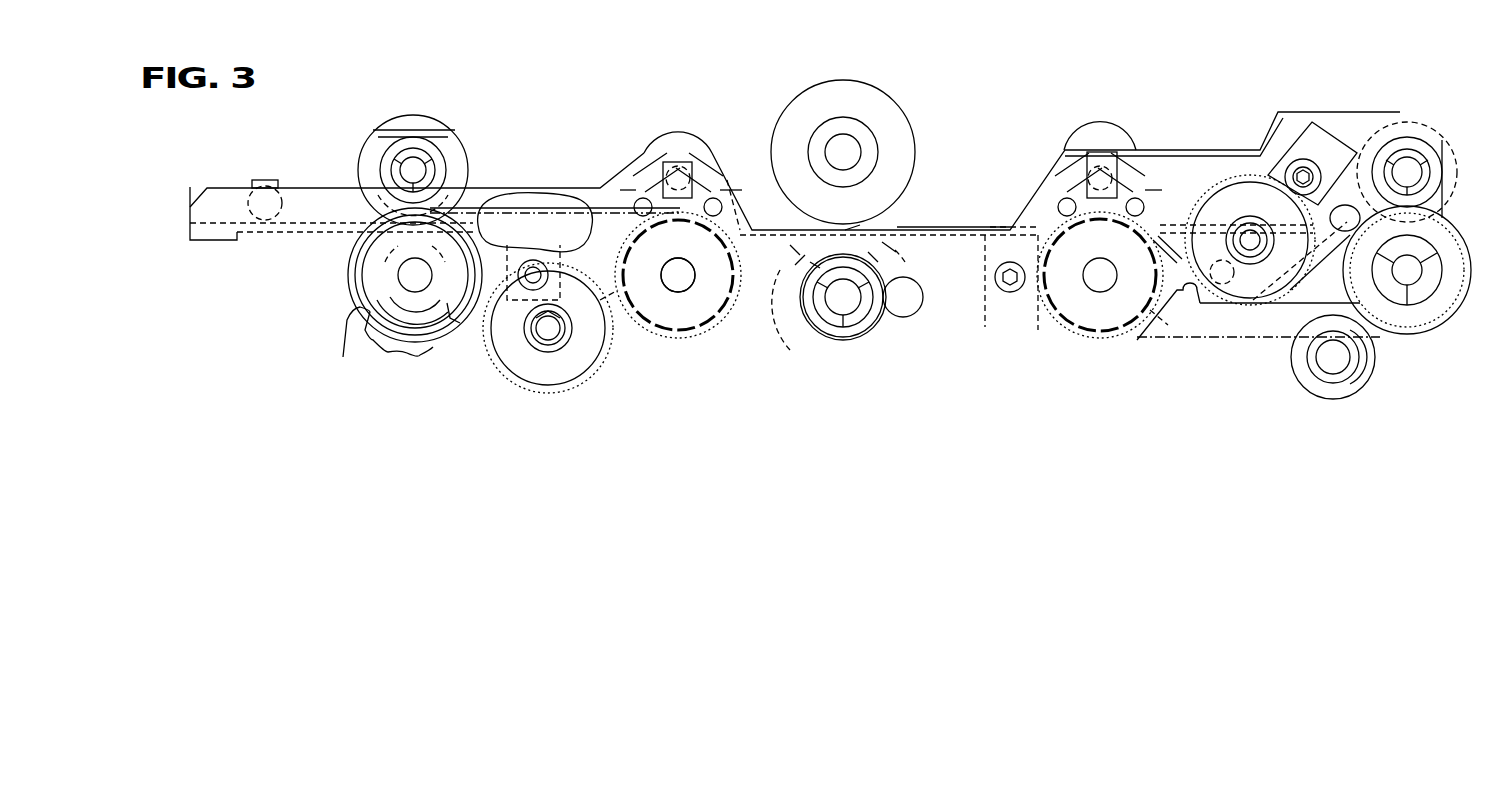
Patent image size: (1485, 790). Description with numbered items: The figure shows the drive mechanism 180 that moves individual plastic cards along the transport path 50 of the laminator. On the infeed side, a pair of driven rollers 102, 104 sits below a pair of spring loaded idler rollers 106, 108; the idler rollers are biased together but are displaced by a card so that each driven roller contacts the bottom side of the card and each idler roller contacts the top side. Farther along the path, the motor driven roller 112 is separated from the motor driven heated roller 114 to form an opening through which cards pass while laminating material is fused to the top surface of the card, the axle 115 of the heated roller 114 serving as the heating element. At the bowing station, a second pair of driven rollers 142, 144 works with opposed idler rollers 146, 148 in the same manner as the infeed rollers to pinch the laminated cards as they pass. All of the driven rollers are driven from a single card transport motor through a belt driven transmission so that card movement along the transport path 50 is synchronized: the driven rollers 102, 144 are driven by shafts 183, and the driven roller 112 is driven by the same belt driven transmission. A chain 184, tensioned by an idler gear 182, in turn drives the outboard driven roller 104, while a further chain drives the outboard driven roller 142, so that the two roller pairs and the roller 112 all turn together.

The drive mechanism 180 is at (929, 74).
The idler roller 146 is at (378, 148).
The idler roller 148 is at (683, 143).
The driven roller 142 is at (372, 297).
The driven roller 144 is at (675, 312).
The idler gear 182 is at (510, 345).
The shaft 183 is at (687, 283).
The chain 184 is at (613, 303).
The motor driven heated roller 114 is at (878, 130).
The axle 115 is at (852, 158).
The motor driven roller 112 is at (812, 318).
The transport path 50 is at (951, 286).
The spring loaded idler roller 106 is at (1093, 140).
The driven roller 102 is at (1080, 307).
The spring loaded idler roller 108 is at (1405, 140).
The driven roller 104 is at (1420, 318).